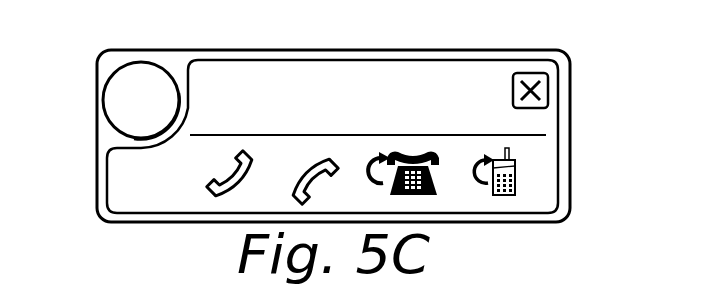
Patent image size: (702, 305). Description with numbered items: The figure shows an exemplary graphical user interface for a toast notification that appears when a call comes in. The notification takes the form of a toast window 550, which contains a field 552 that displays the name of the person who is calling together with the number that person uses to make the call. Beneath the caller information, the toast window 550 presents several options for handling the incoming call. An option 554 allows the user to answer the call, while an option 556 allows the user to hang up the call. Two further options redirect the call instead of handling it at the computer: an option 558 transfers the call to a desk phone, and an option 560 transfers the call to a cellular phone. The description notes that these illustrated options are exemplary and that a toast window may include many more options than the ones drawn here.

The toast window 550 is at (133, 48).
The field 552 is at (279, 78).
The option to answer the call 554 is at (213, 183).
The option to hang up the call 556 is at (290, 187).
The option to transfer the call to a desk phone 558 is at (428, 151).
The option to transfer the call to a cellular phone 560 is at (514, 162).